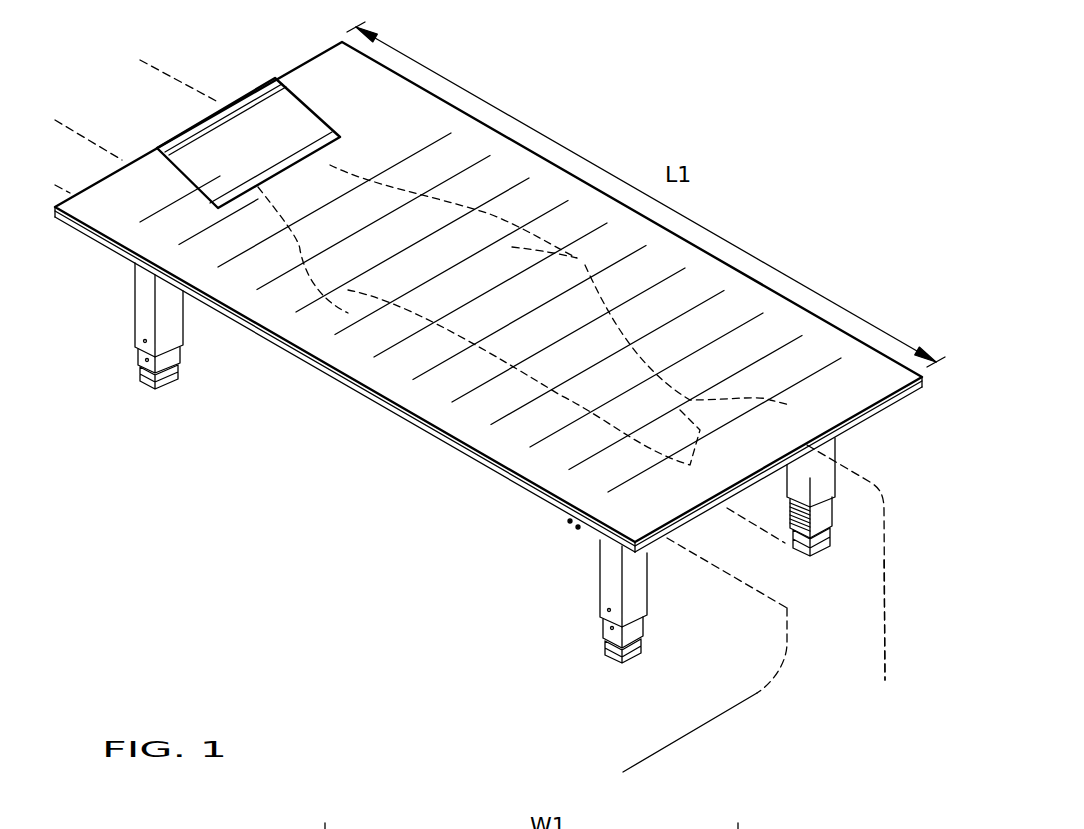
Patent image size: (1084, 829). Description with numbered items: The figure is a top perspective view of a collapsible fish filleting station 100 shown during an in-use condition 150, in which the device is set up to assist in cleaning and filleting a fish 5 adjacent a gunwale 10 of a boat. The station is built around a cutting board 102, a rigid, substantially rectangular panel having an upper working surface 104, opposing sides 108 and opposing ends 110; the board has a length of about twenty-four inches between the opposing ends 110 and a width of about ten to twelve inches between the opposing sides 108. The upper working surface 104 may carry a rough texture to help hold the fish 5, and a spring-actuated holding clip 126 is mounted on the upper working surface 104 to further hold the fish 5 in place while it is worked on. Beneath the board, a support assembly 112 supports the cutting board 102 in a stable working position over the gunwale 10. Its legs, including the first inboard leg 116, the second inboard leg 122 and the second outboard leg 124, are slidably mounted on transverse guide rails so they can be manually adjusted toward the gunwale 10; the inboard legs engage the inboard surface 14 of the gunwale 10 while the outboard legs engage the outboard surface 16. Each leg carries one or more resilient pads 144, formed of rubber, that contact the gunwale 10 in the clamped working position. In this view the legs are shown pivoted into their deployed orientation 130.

The fish 5 is at (433, 332).
The gunwale 10 is at (885, 552).
The inboard surface 14 is at (755, 562).
The outboard surface 16 is at (885, 590).
The collapsible fish filleting station 100 is at (242, 385).
The cutting board 102 is at (442, 470).
The upper working surface 104 is at (812, 347).
The opposing sides 108 is at (427, 442).
The opposing ends 110 is at (303, 63).
The support assembly 112 is at (577, 615).
The first inboard leg 116 is at (147, 307).
The second inboard leg 122 is at (600, 578).
The second outboard leg 124 is at (833, 477).
The spring-actuated holding clip 126 is at (193, 120).
The deployed orientation 130 is at (420, 530).
The resilient pads 144 is at (795, 537).
The in-use condition 150 is at (200, 548).